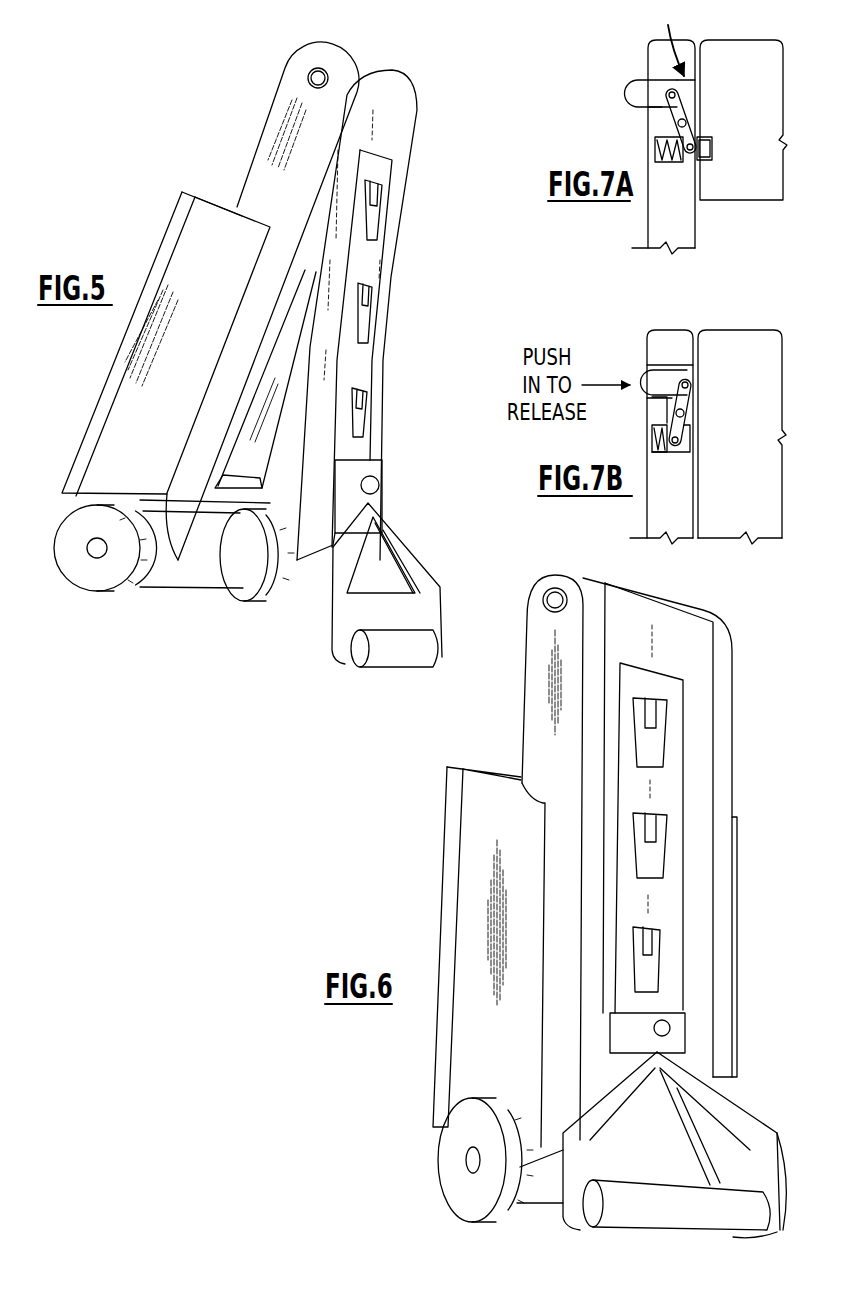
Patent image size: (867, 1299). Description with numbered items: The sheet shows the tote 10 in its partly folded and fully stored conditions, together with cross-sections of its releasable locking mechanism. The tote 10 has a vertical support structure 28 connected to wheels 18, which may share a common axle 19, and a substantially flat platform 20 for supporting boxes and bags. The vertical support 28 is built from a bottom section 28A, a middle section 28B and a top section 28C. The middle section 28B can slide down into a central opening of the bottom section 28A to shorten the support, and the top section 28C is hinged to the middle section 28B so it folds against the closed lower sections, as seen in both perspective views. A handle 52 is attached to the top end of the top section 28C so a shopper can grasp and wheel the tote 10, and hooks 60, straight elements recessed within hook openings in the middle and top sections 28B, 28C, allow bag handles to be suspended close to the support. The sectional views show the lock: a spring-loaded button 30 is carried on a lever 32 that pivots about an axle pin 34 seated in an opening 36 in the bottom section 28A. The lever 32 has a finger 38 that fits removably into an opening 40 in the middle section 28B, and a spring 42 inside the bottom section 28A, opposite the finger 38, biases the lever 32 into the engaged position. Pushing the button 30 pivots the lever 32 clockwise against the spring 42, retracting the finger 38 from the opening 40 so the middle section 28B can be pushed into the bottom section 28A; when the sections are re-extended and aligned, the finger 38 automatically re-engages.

In FIG. 5, the tote 10 is at (462, 95).
In FIG. 6, the tote 10 is at (747, 636).
In FIG. 5, the wheels 18 is at (58, 523).
In FIG. 6, the wheels 18 is at (460, 1207).
In FIG. 5, the common axle 19 is at (98, 556).
In FIG. 6, the common axle 19 is at (470, 1162).
In FIG. 5, the platform 20 is at (117, 377).
In FIG. 6, the platform 20 is at (447, 875).
In FIG. 5, the vertical support structure 28 is at (412, 137).
In FIG. 6, the vertical support structure 28 is at (732, 790).
In FIG. 5, the bottom section 28A is at (277, 127).
In FIG. 7A, the bottom section 28A is at (665, 58).
In FIG. 7B, the bottom section 28A is at (670, 348).
In FIG. 6, the bottom section 28A is at (540, 737).
In FIG. 5, the middle section 28B is at (290, 310).
In FIG. 7A, the middle section 28B is at (752, 60).
In FIG. 5, the top section 28C is at (393, 277).
In FIG. 7B, the top section 28C is at (745, 347).
In FIG. 6, the top section 28C is at (690, 657).
In FIG. 5, the spring-loaded button 30 is at (317, 88).
In FIG. 7A, the spring-loaded button 30 is at (628, 100).
In FIG. 7B, the spring-loaded button 30 is at (640, 375).
In FIG. 6, the spring-loaded button 30 is at (548, 592).
In FIG. 7A, the lever 32 is at (686, 88).
In FIG. 7B, the lever 32 is at (688, 398).
In FIG. 7A, the axle pin 34 is at (688, 118).
In FIG. 7A, the opening 36 is at (663, 44).
In FIG. 7A, the finger 38 is at (712, 138).
In FIG. 7B, the finger 38 is at (688, 414).
In FIG. 7A, the opening 40 is at (712, 160).
In FIG. 7A, the spring 42 is at (664, 162).
In FIG. 7B, the spring 42 is at (662, 452).
In FIG. 5, the handle 52 is at (390, 660).
In FIG. 6, the handle 52 is at (640, 1208).
In FIG. 5, the hooks 60 is at (377, 197).
In FIG. 6, the hooks 60 is at (657, 722).